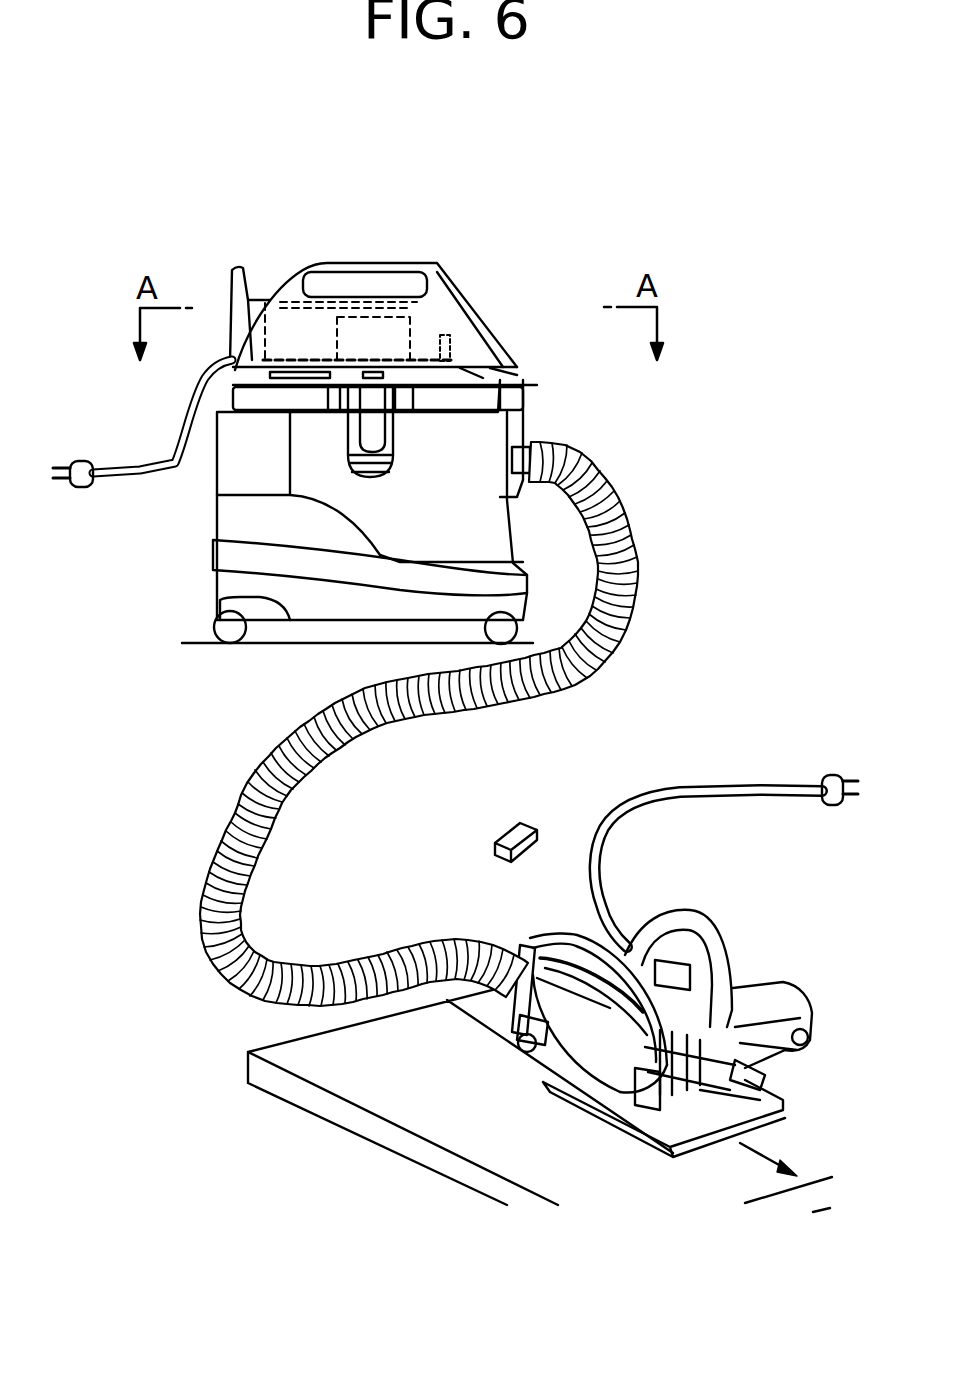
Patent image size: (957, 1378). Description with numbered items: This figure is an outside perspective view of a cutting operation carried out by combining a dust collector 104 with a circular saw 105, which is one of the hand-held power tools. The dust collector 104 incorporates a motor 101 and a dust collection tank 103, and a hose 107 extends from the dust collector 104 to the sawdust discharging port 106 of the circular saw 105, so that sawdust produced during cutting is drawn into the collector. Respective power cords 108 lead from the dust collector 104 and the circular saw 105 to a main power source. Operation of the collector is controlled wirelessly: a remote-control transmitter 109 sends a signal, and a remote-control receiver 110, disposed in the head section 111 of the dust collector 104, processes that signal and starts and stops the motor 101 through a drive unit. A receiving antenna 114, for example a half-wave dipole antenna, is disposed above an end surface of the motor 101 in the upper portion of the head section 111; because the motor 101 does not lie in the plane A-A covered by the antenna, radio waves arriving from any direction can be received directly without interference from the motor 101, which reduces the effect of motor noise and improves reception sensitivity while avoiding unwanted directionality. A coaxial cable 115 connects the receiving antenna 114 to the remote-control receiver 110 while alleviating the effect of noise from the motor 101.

The motor 101 is at (275, 322).
The dust collection tank 103 is at (213, 517).
The dust collector 104 is at (530, 405).
The circular saw 105 is at (720, 930).
The sawdust discharging port 106 is at (500, 953).
The hose 107 is at (200, 883).
The power cord 108 is at (137, 462).
The remote-control transmitter 109 is at (495, 840).
The remote-control receiver 110 is at (455, 348).
The head section 111 is at (467, 273).
The receiving antenna 114 is at (320, 320).
The coaxial cable 115 is at (232, 310).